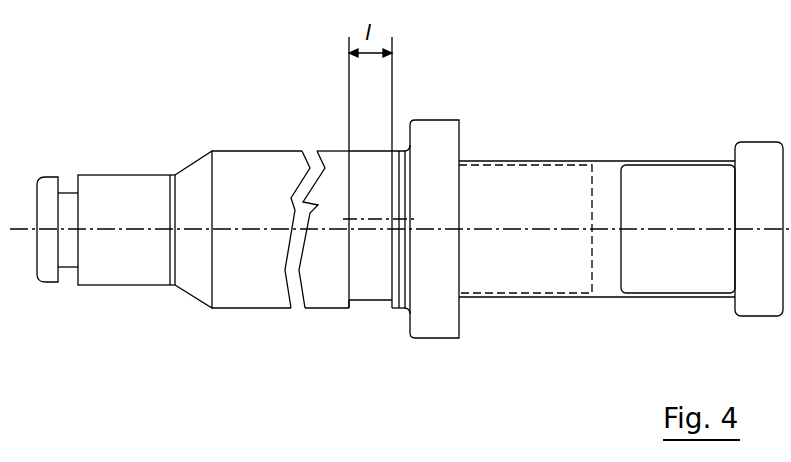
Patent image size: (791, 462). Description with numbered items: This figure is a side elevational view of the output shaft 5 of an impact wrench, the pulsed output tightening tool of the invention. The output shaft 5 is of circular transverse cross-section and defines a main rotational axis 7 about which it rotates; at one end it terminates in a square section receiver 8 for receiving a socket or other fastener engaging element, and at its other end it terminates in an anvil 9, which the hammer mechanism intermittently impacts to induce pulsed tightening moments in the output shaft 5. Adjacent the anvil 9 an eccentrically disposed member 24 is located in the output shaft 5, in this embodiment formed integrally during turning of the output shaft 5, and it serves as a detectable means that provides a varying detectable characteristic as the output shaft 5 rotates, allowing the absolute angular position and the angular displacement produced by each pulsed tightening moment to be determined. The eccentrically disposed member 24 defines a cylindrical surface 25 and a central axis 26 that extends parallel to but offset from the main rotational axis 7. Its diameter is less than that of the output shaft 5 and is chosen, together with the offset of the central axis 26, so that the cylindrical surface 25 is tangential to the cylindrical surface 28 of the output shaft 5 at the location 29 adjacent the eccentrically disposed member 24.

The output shaft 5 is at (237, 300).
The rotational axis 7 is at (678, 230).
The square section receiver 8 is at (120, 263).
The anvil 9 is at (440, 122).
The eccentrically disposed member 24 is at (364, 292).
The cylindrical surface 25 is at (371, 290).
The central axis 26 is at (377, 218).
The cylindrical surface 28 is at (338, 153).
The tangential location 29 is at (372, 152).